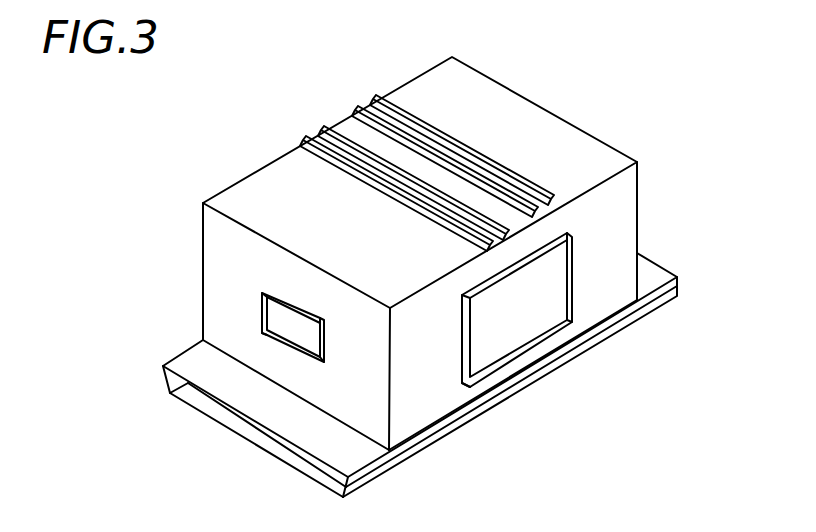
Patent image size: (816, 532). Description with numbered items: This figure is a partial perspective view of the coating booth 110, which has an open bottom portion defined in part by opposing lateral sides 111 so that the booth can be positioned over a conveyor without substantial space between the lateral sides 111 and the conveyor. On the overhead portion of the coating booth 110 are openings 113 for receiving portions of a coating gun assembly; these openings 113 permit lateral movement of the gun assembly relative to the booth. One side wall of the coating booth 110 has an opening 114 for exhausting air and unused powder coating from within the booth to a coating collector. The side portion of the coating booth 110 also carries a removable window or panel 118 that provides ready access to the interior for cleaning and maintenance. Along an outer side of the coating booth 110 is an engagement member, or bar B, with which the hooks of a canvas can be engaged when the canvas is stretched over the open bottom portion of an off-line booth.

The coating booth 110 is at (598, 127).
The lateral sides 111 is at (383, 379).
The openings 113 is at (370, 103).
The opening 114 is at (279, 317).
The removable window or panel 118 is at (570, 278).
The bar B is at (642, 308).